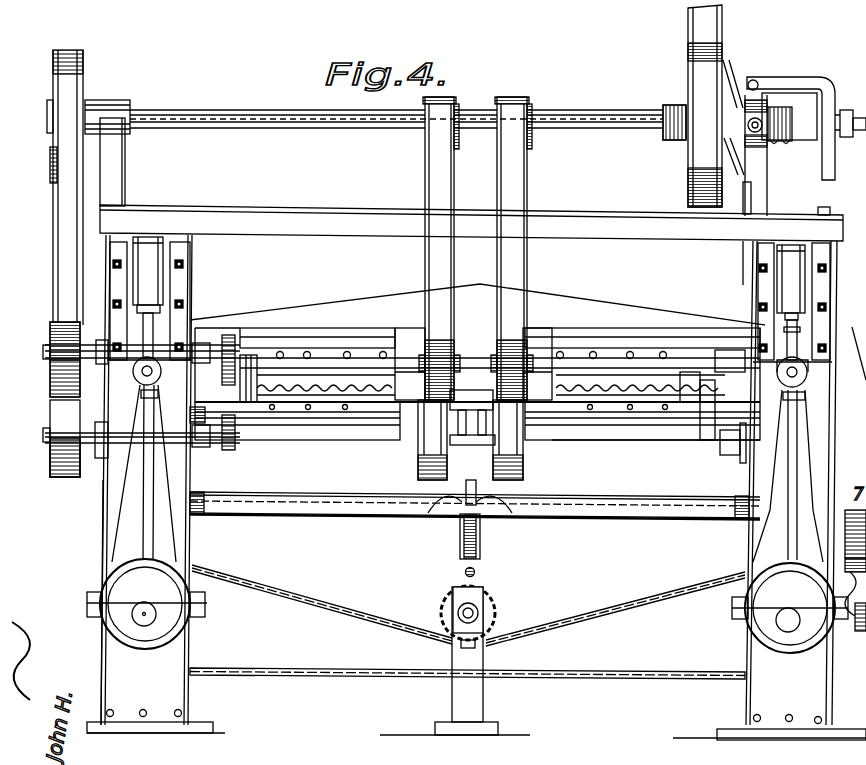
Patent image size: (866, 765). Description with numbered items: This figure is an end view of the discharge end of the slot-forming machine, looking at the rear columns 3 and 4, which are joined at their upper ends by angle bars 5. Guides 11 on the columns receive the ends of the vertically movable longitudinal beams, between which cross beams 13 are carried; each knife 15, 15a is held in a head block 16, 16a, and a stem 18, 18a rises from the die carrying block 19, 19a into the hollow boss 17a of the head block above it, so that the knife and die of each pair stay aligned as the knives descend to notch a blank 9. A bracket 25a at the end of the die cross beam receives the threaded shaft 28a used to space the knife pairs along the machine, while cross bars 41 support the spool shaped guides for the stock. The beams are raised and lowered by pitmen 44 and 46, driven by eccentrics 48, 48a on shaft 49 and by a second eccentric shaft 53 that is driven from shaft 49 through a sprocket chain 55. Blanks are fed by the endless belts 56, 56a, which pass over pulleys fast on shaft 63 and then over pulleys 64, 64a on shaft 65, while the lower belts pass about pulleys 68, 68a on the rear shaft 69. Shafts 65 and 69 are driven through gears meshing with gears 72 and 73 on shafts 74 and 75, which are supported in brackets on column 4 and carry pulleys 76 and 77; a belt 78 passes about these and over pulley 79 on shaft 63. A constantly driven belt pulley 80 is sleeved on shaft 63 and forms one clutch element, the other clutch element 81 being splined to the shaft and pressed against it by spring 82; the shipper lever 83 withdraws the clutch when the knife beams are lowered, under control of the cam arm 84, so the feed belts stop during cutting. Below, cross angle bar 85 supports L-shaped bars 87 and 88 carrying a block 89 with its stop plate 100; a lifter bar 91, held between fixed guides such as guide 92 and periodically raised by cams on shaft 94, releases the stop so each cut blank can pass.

The rear column 3 is at (745, 293).
The rear column 4 is at (193, 282).
The angle bars 5 is at (471, 179).
The blank 9 is at (473, 385).
The guides 11 is at (190, 320).
The cross beams 13 is at (500, 347).
The knife 15 is at (640, 381).
The knife 15a is at (326, 381).
The head block 16 is at (642, 343).
The head block 16a is at (317, 343).
The hollow boss or guideway 17a is at (690, 380).
The finger or stem 18 is at (690, 402).
The finger or stem 18a is at (300, 422).
The die carrying block 19 is at (645, 435).
The die carrying block 19a is at (347, 428).
The bracket 25a is at (854, 342).
The shaft 28a is at (821, 350).
The cross bars 41 is at (189, 696).
The pitman 44 is at (782, 530).
The pitman 46 is at (160, 529).
The eccentric 48 is at (766, 612).
The eccentric 48a is at (126, 612).
The shaft 49 is at (788, 628).
The shaft 53 is at (143, 622).
The sprocket chain 55 is at (366, 620).
The endless belt 56 is at (527, 253).
The endless belt 56a is at (427, 248).
The shaft 63 is at (188, 128).
The pulley 64 is at (532, 330).
The pulley 64a is at (423, 350).
The shaft 65 is at (290, 320).
The pulley 68 is at (512, 470).
The pulley 68a is at (420, 466).
The shaft 69 is at (596, 452).
The gear 72 is at (280, 330).
The gear 73 is at (232, 452).
The shaft 74 is at (126, 362).
The shaft 75 is at (125, 438).
The pulley 76 is at (57, 345).
The pulley 77 is at (52, 440).
The belt 78 is at (62, 212).
The pulley 79 is at (84, 83).
The belt pulley 80 is at (688, 58).
The clutch element 81 is at (728, 55).
The spring 82 is at (779, 140).
The shipper lever 83 is at (762, 178).
The cam arm 84 is at (743, 208).
The cross angle bar 85 is at (656, 518).
The L-shaped bar 87 is at (490, 491).
The L-shaped bar 88 is at (440, 496).
The block 89 is at (540, 498).
The lifter bar 91 is at (478, 545).
The fixed guide 92 is at (460, 531).
The shaft 94 is at (476, 573).
The stop plate 100 is at (472, 417).